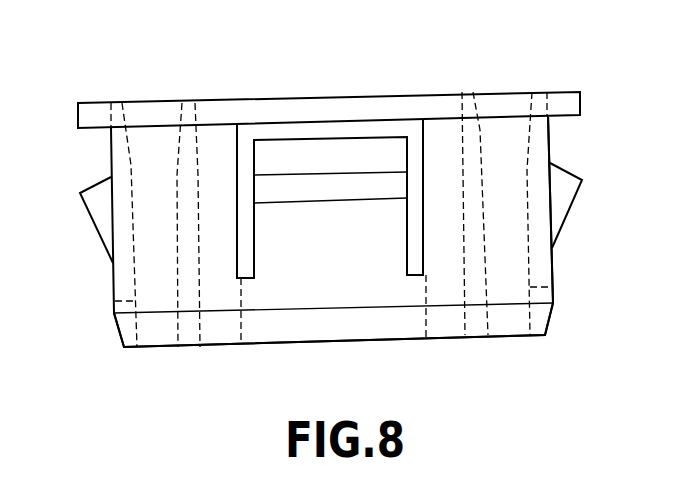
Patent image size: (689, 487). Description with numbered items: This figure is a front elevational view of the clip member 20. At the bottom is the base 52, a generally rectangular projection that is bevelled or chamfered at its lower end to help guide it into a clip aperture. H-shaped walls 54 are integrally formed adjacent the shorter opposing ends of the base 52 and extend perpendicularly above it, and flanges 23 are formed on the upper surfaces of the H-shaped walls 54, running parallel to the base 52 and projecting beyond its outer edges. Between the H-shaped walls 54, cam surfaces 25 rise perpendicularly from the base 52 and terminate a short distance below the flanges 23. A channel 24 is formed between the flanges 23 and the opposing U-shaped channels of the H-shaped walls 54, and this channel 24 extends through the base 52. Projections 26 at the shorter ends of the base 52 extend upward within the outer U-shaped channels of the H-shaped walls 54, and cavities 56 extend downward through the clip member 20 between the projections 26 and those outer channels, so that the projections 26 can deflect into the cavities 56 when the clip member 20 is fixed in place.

The clip member 20 is at (544, 86).
The flanges 23 is at (78, 106).
The channel 24 is at (427, 318).
The cam surfaces 25 is at (366, 196).
The projections 26 is at (95, 226).
The base 52 is at (517, 339).
The H-shaped walls 54 is at (549, 148).
The cavities 56 is at (480, 130).